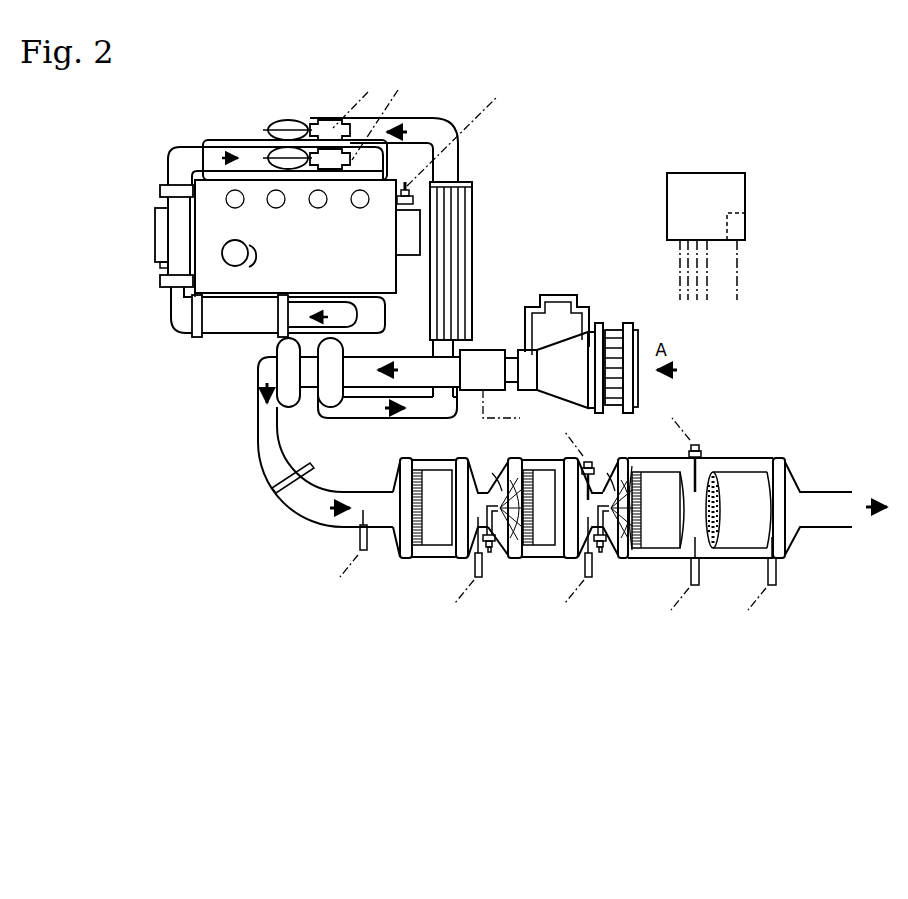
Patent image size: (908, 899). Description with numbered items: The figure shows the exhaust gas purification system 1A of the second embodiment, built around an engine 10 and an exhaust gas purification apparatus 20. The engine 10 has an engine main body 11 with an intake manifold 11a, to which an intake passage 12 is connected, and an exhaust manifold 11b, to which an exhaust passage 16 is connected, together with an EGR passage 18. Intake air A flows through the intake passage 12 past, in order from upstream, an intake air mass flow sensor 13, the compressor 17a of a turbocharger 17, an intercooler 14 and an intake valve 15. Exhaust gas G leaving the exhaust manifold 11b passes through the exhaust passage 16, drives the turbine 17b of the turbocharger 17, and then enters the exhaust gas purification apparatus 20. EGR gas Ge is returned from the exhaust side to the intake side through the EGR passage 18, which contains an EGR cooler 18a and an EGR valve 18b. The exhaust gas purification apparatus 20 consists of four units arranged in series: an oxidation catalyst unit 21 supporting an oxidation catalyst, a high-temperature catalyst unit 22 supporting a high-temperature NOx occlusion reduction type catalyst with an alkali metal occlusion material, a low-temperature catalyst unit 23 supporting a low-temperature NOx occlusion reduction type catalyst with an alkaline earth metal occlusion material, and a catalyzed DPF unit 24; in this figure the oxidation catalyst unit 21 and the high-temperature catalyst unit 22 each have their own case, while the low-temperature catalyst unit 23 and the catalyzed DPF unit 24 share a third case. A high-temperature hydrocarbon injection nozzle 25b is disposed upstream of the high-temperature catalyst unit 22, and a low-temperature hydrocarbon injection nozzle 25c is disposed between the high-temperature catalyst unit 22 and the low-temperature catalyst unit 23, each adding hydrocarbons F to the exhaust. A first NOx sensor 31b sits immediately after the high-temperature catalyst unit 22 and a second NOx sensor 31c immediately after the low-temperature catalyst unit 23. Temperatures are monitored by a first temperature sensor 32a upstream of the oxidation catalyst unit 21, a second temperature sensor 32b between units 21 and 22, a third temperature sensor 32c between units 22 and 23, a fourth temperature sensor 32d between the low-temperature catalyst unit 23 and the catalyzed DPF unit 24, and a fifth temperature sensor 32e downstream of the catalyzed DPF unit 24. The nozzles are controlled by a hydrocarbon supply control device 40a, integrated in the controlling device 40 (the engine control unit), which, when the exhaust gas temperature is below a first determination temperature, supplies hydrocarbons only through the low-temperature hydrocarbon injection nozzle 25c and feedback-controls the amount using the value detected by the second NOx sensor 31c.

The engine 10 is at (562, 200).
The exhaust gas purification system 1A is at (758, 360).
The engine main body 11 is at (323, 257).
The intake manifold 11a is at (363, 157).
The exhaust manifold 11b is at (367, 310).
The intake passage 12 is at (456, 158).
The intake air mass flow sensor 13 is at (487, 350).
The intercooler 14 is at (472, 213).
The intake valve 15 is at (283, 120).
The exhaust passage 16 is at (260, 455).
The turbocharger 17 is at (281, 393).
The compressor 17a is at (334, 408).
The turbine 17b is at (290, 408).
The EGR passage 18 is at (236, 242).
The EGR cooler 18a is at (168, 223).
The EGR valve 18b is at (266, 160).
The exhaust gas purification apparatus 20 is at (702, 486).
The oxidation catalyst unit 21 is at (430, 525).
The high-temperature catalyst unit 22 is at (537, 525).
The low-temperature catalyst unit 23 is at (647, 525).
The catalyzed DPF unit 24 is at (732, 520).
The high-temperature hydrocarbon injection nozzle 25b is at (493, 560).
The low-temperature hydrocarbon injection nozzle 25c is at (604, 560).
The first NOx sensor 31b is at (594, 458).
The second NOx sensor 31c is at (698, 442).
The first temperature sensor 32a is at (365, 553).
The second temperature sensor 32b is at (480, 580).
The third temperature sensor 32c is at (589, 580).
The fourth temperature sensor 32d is at (697, 588).
The fifth temperature sensor 32e is at (774, 588).
The controlling device 40 is at (734, 236).
The hydrocarbon supply control device 40a is at (733, 233).